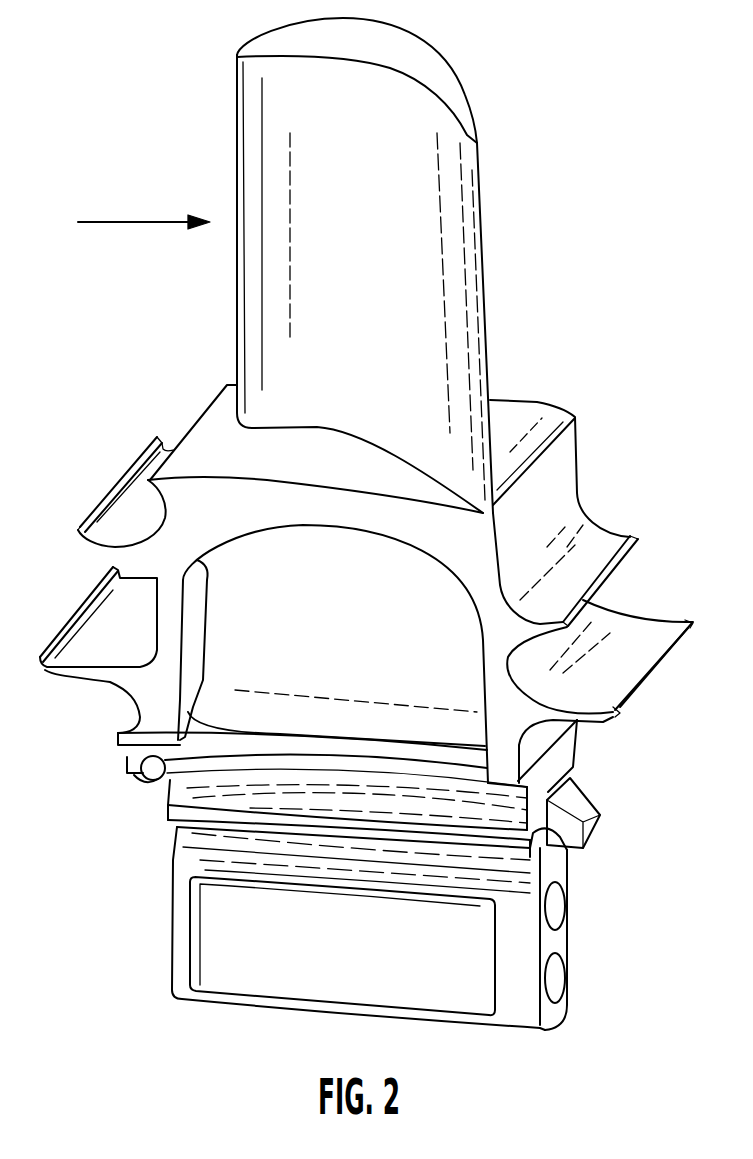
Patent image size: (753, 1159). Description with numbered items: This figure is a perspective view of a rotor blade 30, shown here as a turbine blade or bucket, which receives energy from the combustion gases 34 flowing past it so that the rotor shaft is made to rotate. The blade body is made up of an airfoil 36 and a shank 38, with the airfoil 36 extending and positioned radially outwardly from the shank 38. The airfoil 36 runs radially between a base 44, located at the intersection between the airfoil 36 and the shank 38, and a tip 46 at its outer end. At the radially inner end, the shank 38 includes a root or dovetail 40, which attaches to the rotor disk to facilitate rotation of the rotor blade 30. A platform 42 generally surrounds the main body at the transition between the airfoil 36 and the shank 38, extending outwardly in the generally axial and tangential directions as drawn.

The rotor blade 30 is at (80, 380).
The combustion gases 34 is at (158, 226).
The airfoil 36 is at (346, 263).
The shank 38 is at (266, 660).
The root or dovetail 40 is at (495, 855).
The platform 42 is at (220, 498).
The base 44 is at (312, 440).
The tip 46 is at (466, 88).